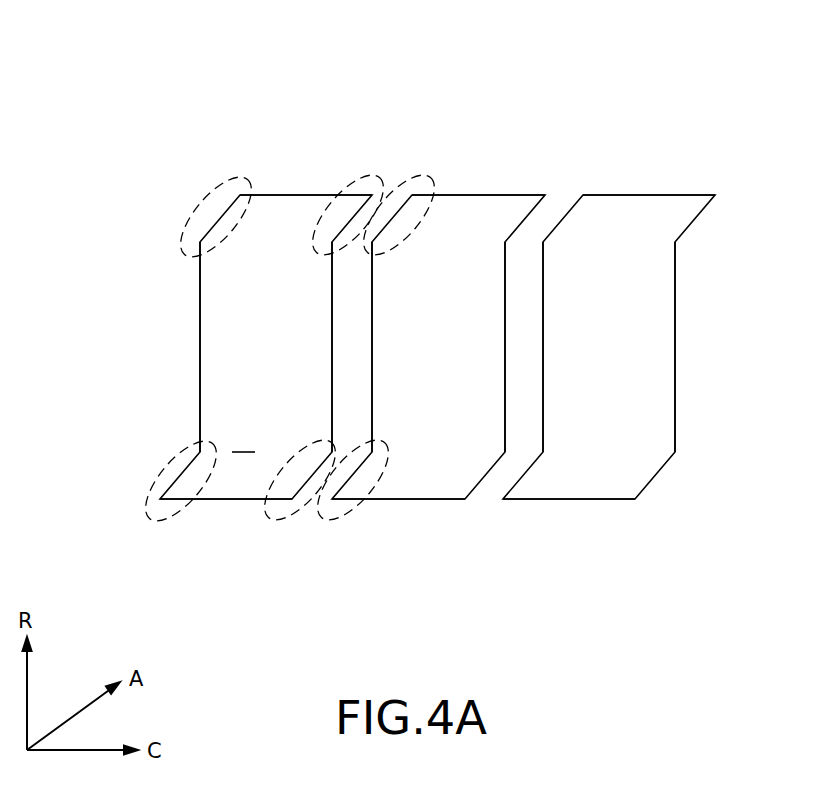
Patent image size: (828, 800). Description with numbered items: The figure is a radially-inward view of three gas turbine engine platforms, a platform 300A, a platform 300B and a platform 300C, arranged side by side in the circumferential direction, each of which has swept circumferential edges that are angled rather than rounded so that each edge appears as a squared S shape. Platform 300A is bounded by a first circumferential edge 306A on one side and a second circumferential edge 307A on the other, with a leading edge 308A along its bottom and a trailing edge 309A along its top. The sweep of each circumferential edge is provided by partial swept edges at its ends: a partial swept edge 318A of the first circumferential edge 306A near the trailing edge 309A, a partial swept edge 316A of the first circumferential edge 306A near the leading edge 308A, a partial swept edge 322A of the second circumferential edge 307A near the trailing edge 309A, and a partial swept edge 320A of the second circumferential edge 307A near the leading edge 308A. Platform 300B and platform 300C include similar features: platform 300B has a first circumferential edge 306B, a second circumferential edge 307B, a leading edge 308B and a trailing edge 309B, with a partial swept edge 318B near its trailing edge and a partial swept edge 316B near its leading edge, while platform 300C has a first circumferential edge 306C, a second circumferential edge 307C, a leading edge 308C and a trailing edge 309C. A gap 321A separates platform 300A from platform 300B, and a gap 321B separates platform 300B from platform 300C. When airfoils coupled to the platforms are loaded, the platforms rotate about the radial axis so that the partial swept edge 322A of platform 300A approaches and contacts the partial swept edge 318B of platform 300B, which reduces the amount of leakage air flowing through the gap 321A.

The platform 300A is at (240, 118).
The platform 300B is at (478, 90).
The platform 300C is at (636, 102).
The first circumferential edge 306A is at (200, 300).
The first circumferential edge 306B is at (372, 300).
The first circumferential edge 306C is at (545, 300).
The second circumferential edge 307A is at (332, 357).
The second circumferential edge 307B is at (505, 357).
The second circumferential edge 307C is at (675, 357).
The leading edge 308A is at (212, 500).
The leading edge 308B is at (415, 500).
The leading edge 308C is at (580, 500).
The trailing edge 309A is at (290, 195).
The trailing edge 309B is at (458, 195).
The trailing edge 309C is at (663, 195).
The partial swept edge 316A is at (145, 515).
The partial swept edge 316B is at (328, 520).
The partial swept edge 318A is at (185, 255).
The partial swept edge 318B is at (417, 177).
The partial swept edge 320A is at (282, 520).
The gap 321A is at (360, 345).
The gap 321B is at (528, 355).
The partial swept edge 322A is at (368, 178).